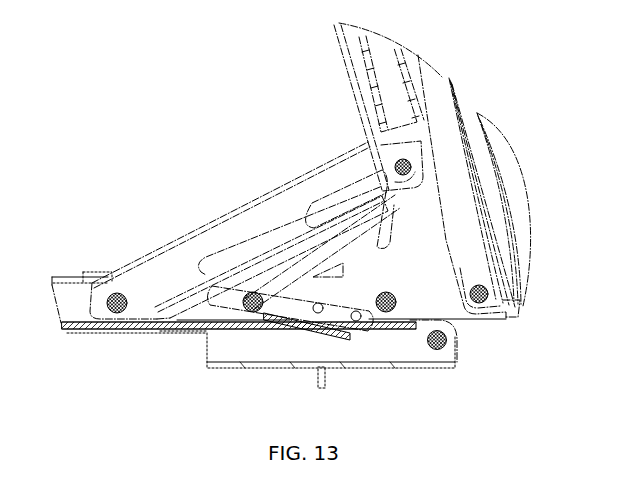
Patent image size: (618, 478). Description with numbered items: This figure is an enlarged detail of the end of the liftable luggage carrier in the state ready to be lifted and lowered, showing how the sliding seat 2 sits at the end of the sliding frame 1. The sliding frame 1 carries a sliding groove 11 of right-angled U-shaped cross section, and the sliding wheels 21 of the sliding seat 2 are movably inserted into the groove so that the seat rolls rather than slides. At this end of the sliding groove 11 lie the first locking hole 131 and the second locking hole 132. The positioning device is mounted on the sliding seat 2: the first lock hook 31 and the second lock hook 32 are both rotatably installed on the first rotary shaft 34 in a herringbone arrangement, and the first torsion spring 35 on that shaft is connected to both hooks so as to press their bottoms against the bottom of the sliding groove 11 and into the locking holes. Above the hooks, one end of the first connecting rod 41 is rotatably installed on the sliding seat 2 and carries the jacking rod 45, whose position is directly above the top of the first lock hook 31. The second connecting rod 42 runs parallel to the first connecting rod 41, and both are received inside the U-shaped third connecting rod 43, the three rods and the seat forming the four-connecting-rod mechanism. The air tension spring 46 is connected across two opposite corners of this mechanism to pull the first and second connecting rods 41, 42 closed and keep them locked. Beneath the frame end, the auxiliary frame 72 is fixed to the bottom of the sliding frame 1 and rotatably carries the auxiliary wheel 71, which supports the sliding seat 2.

The sliding frame 1 is at (140, 333).
The sliding seat 2 is at (147, 254).
The sliding groove 11 is at (78, 296).
The sliding wheel 21 is at (117, 315).
The first lock hook 31 is at (307, 262).
The second lock hook 32 is at (339, 315).
The first rotary shaft 34 is at (249, 313).
The first torsion spring 35 is at (253, 243).
The first connecting rod 41 is at (347, 77).
The second connecting rod 42 is at (466, 117).
The third connecting rod 43 is at (502, 190).
The jacking rod 45 is at (362, 165).
The air tension spring 46 is at (409, 77).
The auxiliary wheel 71 is at (455, 340).
The auxiliary frame 72 is at (288, 368).
The first locking hole 131 is at (300, 330).
The second locking hole 132 is at (198, 334).